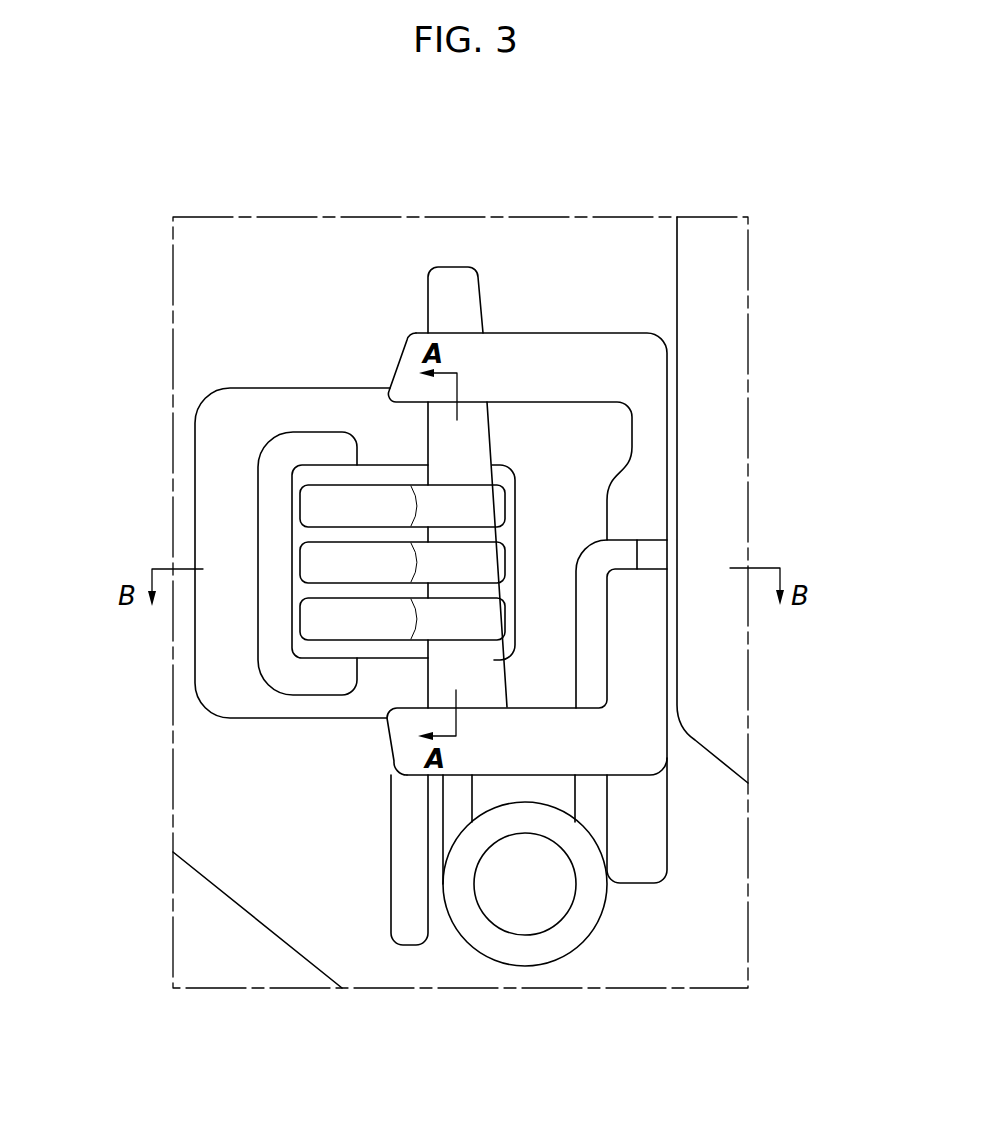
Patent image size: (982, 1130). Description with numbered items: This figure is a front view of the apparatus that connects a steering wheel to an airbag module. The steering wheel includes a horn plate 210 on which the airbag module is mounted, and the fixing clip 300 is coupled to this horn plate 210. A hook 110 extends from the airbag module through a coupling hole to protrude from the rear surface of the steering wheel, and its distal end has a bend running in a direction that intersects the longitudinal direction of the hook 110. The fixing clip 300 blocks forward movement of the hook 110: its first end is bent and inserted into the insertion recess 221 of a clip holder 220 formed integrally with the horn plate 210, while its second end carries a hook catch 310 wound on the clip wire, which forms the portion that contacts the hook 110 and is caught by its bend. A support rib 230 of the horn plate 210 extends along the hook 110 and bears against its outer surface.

The hook 110 is at (320, 620).
The horn plate 210 is at (307, 258).
The clip holder 220 is at (622, 366).
The insertion recess 221 is at (653, 558).
The support rib 230 is at (227, 452).
The fixing clip 300 is at (527, 955).
The hook catch 310 is at (458, 283).